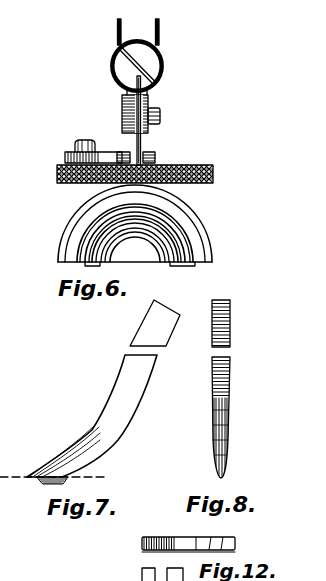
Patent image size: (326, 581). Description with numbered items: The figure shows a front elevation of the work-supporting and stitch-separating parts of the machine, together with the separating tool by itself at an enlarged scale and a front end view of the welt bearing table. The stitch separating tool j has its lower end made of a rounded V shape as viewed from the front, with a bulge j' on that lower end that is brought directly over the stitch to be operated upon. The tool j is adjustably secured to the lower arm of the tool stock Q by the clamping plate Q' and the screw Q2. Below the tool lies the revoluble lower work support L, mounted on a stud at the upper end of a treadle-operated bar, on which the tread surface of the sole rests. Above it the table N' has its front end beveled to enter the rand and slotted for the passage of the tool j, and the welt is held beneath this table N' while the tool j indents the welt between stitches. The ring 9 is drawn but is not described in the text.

In FIG. 6, the tool stock Q is at (146, 55).
In FIG. 6, the clamping plate Q' is at (155, 106).
In FIG. 6, the screw Q2 is at (161, 117).
In FIG. 6, the table N' is at (93, 138).
In FIG. 12, the table N' is at (188, 535).
In FIG. 6, the stitch separating tool j is at (151, 120).
In FIG. 7, the stitch separating tool j is at (103, 388).
In FIG. 8, the stitch separating tool j is at (224, 389).
In FIG. 7, the bulge j' is at (51, 486).
In FIG. 6, the ring segment 9 is at (82, 214).
In FIG. 6, the lower work support L is at (192, 231).